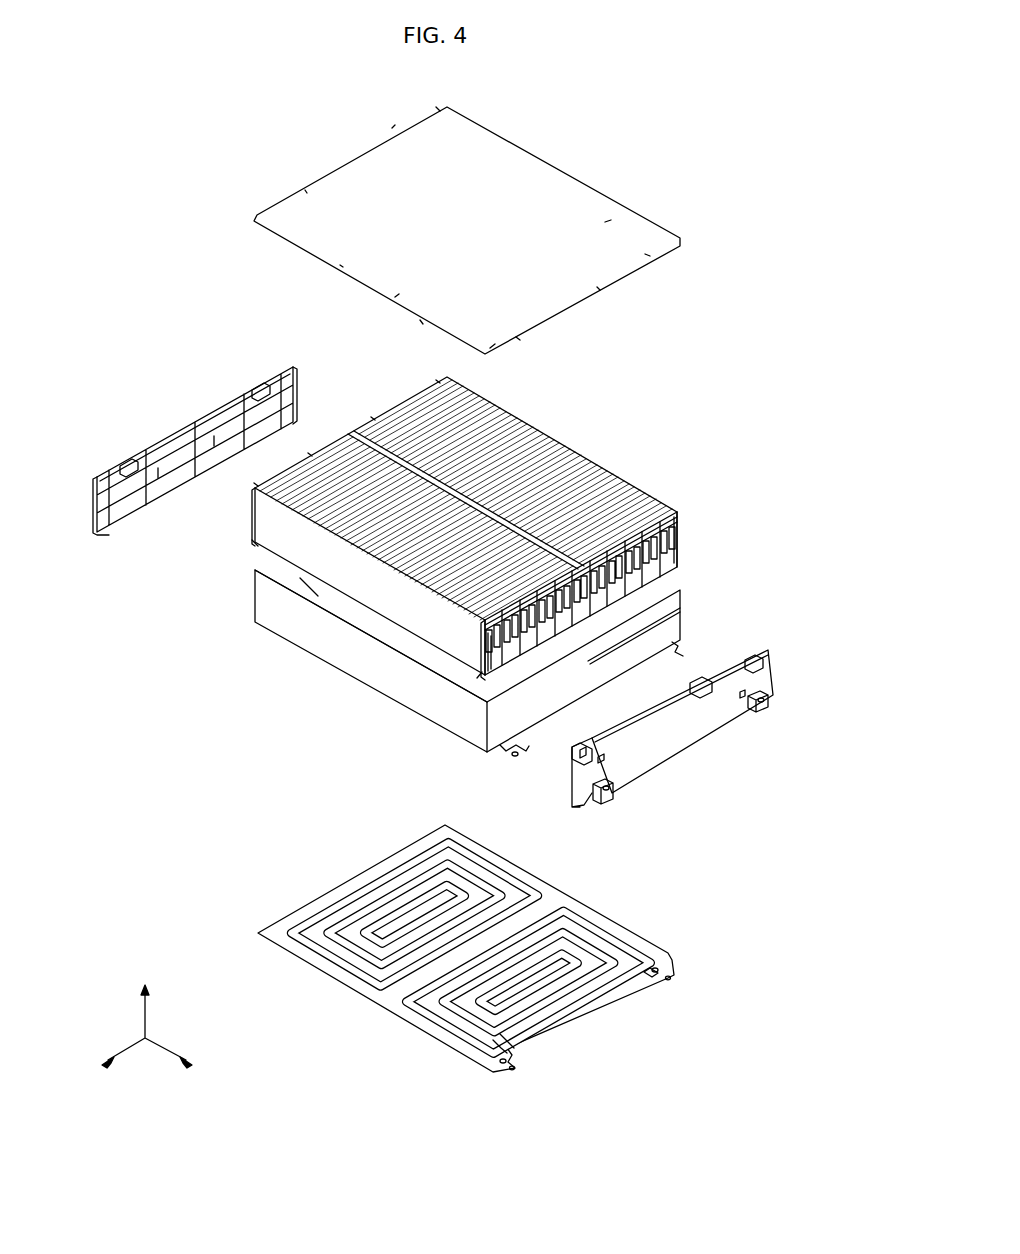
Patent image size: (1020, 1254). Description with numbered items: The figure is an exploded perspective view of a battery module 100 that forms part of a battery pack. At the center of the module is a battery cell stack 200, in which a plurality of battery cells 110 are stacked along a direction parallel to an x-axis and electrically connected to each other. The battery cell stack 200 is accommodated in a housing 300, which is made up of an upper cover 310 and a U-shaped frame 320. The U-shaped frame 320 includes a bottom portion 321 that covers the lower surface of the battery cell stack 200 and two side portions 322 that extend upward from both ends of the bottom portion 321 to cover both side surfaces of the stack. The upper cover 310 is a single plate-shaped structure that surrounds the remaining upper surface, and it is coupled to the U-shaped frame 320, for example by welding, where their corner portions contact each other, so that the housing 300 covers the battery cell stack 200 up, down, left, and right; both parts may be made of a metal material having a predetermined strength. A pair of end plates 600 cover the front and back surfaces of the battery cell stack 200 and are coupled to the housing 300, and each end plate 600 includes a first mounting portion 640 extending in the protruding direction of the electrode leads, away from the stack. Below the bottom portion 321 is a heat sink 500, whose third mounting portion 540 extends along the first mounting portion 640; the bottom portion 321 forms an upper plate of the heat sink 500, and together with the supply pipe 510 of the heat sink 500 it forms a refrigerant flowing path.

The battery module 100 is at (179, 119).
The battery cell 110 is at (563, 472).
The battery cell stack 200 is at (471, 528).
The housing 300 is at (745, 295).
The upper cover 310 is at (577, 200).
The U-shaped frame 320 is at (515, 685).
The bottom portion 321 is at (517, 688).
The side portion 322 is at (653, 616).
The heat sink 500 is at (475, 933).
The supply pipe 510 is at (318, 910).
The third mounting portion 540 is at (671, 978).
The end plate 600 is at (197, 418).
The first mounting portion 640 is at (613, 800).